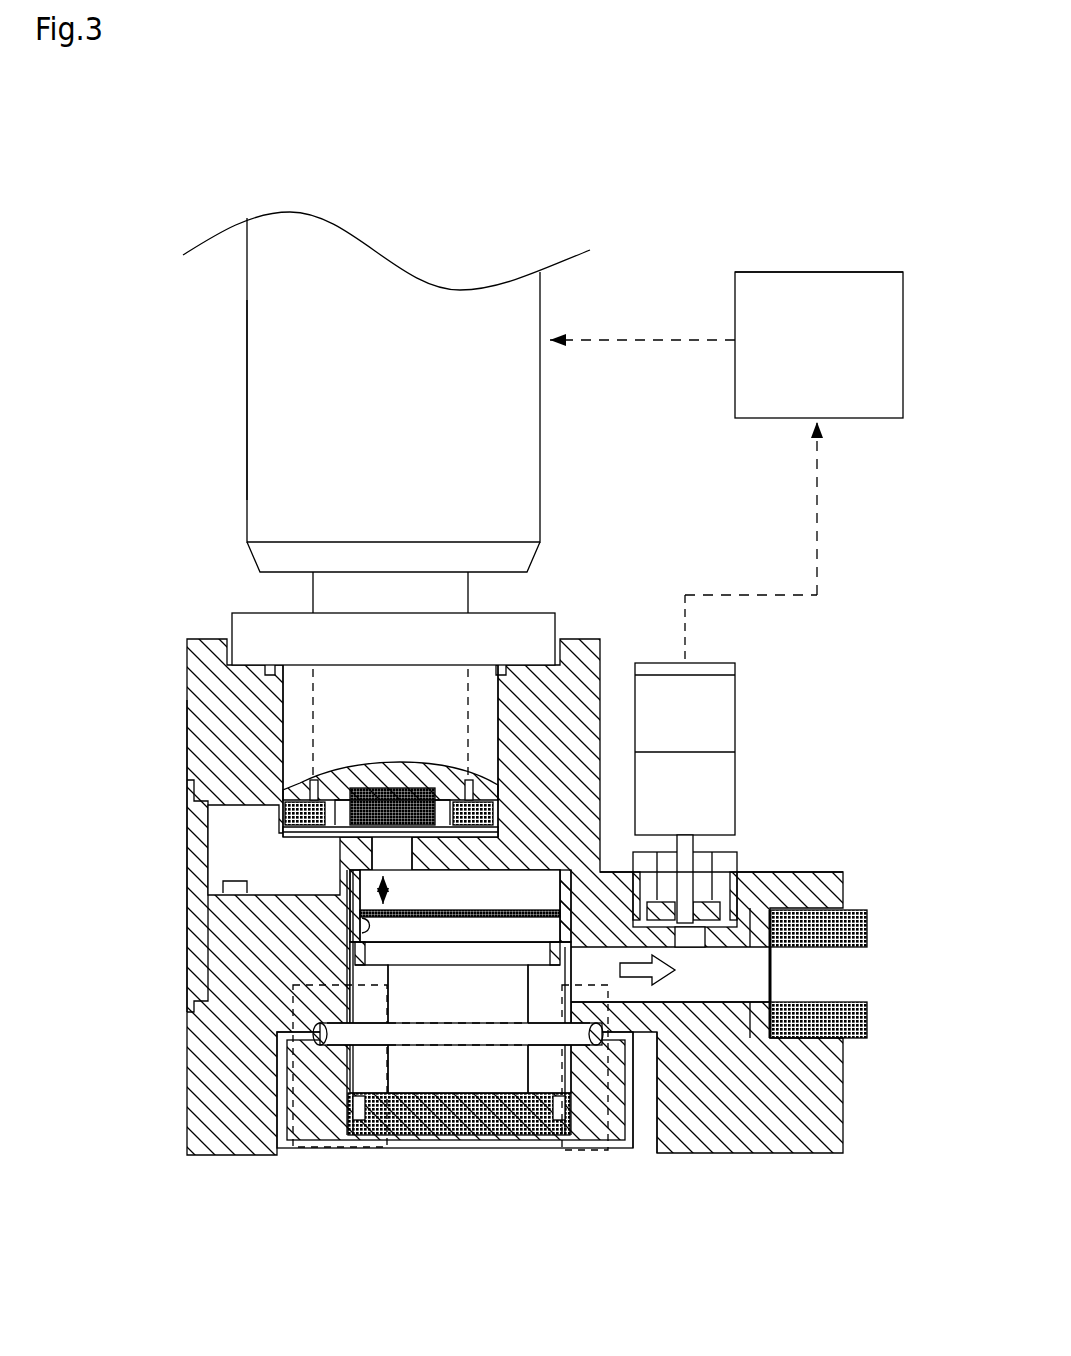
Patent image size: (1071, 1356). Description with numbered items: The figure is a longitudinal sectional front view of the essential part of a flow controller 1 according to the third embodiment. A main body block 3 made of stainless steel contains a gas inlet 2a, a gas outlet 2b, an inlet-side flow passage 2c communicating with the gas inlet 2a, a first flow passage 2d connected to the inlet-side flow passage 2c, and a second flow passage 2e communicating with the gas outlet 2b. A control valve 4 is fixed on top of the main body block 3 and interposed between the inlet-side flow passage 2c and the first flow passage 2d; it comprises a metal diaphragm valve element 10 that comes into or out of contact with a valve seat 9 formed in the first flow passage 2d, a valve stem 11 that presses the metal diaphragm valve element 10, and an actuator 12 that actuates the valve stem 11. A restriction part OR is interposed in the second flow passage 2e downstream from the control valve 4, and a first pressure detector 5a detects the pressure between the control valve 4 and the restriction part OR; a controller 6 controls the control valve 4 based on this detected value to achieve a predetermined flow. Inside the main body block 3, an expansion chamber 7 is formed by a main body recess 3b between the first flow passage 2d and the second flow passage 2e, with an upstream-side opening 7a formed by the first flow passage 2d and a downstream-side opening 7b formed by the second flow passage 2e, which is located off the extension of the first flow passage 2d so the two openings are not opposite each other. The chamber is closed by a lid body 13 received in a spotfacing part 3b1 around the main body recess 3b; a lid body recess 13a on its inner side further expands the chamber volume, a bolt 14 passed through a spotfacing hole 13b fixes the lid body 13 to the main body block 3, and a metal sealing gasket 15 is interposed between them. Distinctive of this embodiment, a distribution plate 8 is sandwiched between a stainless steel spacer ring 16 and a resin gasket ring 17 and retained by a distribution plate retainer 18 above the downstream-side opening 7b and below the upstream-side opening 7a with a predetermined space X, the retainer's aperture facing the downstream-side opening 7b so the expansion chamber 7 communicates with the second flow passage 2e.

The flow controller 1 is at (667, 267).
The gas inlet 2a is at (194, 853).
The gas outlet 2b is at (868, 972).
The inlet-side flow passage 2c is at (223, 887).
The first flow passage 2d is at (336, 865).
The second flow passage 2e is at (565, 965).
The main body block 3 is at (212, 1089).
The main body recess 3b is at (513, 880).
The spotfacing part 3b1 is at (648, 1040).
The control valve 4 is at (220, 520).
The first pressure detector 5a is at (742, 787).
The controller 6 is at (735, 390).
The expansion chamber 7 is at (355, 960).
The upstream-side opening 7a is at (408, 873).
The downstream-side opening 7b is at (680, 1000).
The distribution plate 8 is at (428, 905).
The valve seat 9 is at (336, 851).
The metal diaphragm valve element 10 is at (307, 780).
The valve stem 11 is at (315, 772).
The actuator 12 is at (247, 420).
The lid body 13 is at (458, 1148).
The lid body recess 13a is at (498, 1145).
The spotfacing hole 13b is at (302, 1147).
The bolt 14 is at (330, 1148).
The metal sealing gasket 15 is at (378, 1140).
The spacer ring 16 is at (362, 890).
The gasket ring 17 is at (362, 925).
The distribution plate retainer 18 is at (387, 1008).
The restriction part OR is at (773, 970).